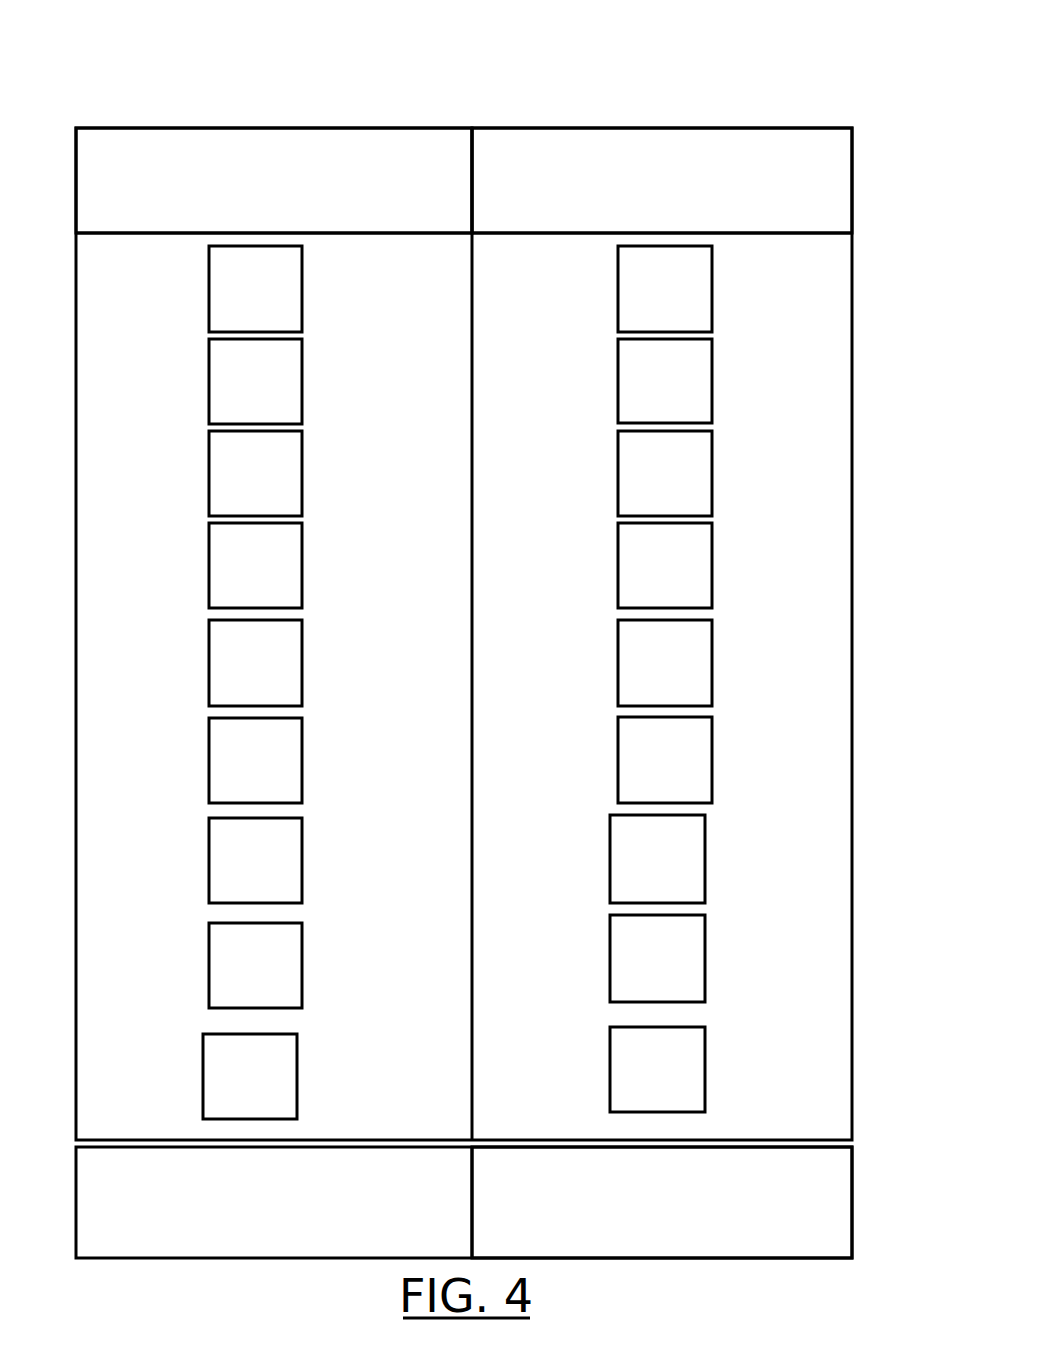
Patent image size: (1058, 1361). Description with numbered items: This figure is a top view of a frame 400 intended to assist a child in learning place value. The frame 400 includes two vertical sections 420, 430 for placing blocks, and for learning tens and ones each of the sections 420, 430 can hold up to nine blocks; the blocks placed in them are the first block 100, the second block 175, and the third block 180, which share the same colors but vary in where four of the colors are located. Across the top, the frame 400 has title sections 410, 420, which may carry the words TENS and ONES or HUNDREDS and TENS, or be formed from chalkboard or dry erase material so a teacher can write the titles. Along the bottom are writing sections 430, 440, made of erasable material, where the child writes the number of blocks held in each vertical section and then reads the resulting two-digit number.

The frame 400 is at (210, 78).
The title section 410 is at (274, 180).
The vertical section / title section 420 is at (56, 361).
The vertical section / writing section 430 is at (908, 465).
The writing section 440 is at (662, 1202).
The first block 100 is at (460, 524).
The second block 175 is at (460, 711).
The third block 180 is at (460, 673).